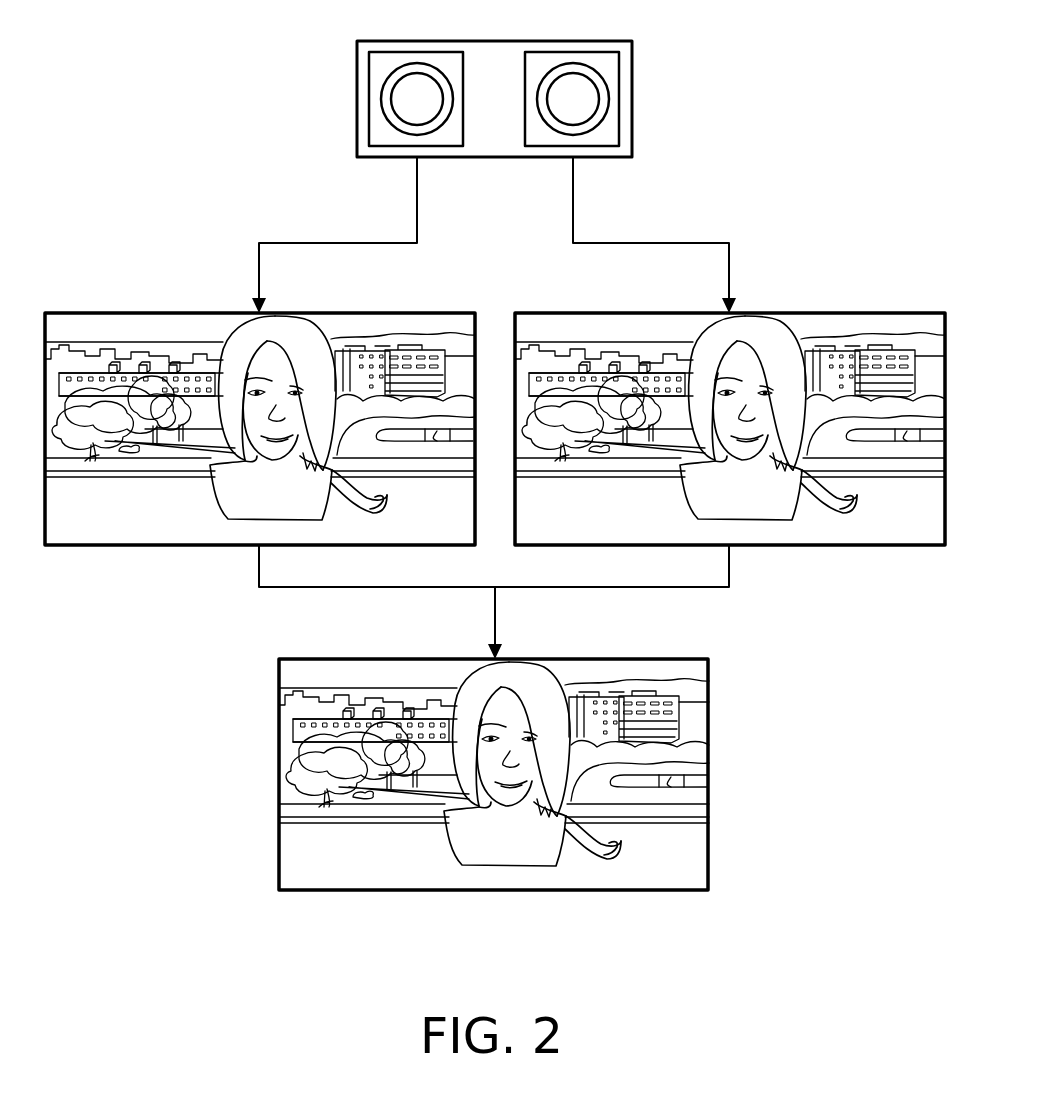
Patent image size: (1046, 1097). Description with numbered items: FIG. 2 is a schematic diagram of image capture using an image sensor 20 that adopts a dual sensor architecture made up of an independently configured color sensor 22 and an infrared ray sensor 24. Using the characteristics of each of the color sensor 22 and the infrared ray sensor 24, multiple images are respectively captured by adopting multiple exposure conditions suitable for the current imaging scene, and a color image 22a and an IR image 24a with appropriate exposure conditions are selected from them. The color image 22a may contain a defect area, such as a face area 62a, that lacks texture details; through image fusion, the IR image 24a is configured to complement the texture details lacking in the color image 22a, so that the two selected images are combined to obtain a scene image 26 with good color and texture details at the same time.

The image sensor 20 is at (493, 78).
The color sensor 22 is at (403, 98).
The infrared ray sensor 24 is at (585, 98).
The color image 22a is at (418, 313).
The IR image 24a is at (888, 313).
The scene image 26 is at (494, 743).
The face area 62a is at (543, 683).